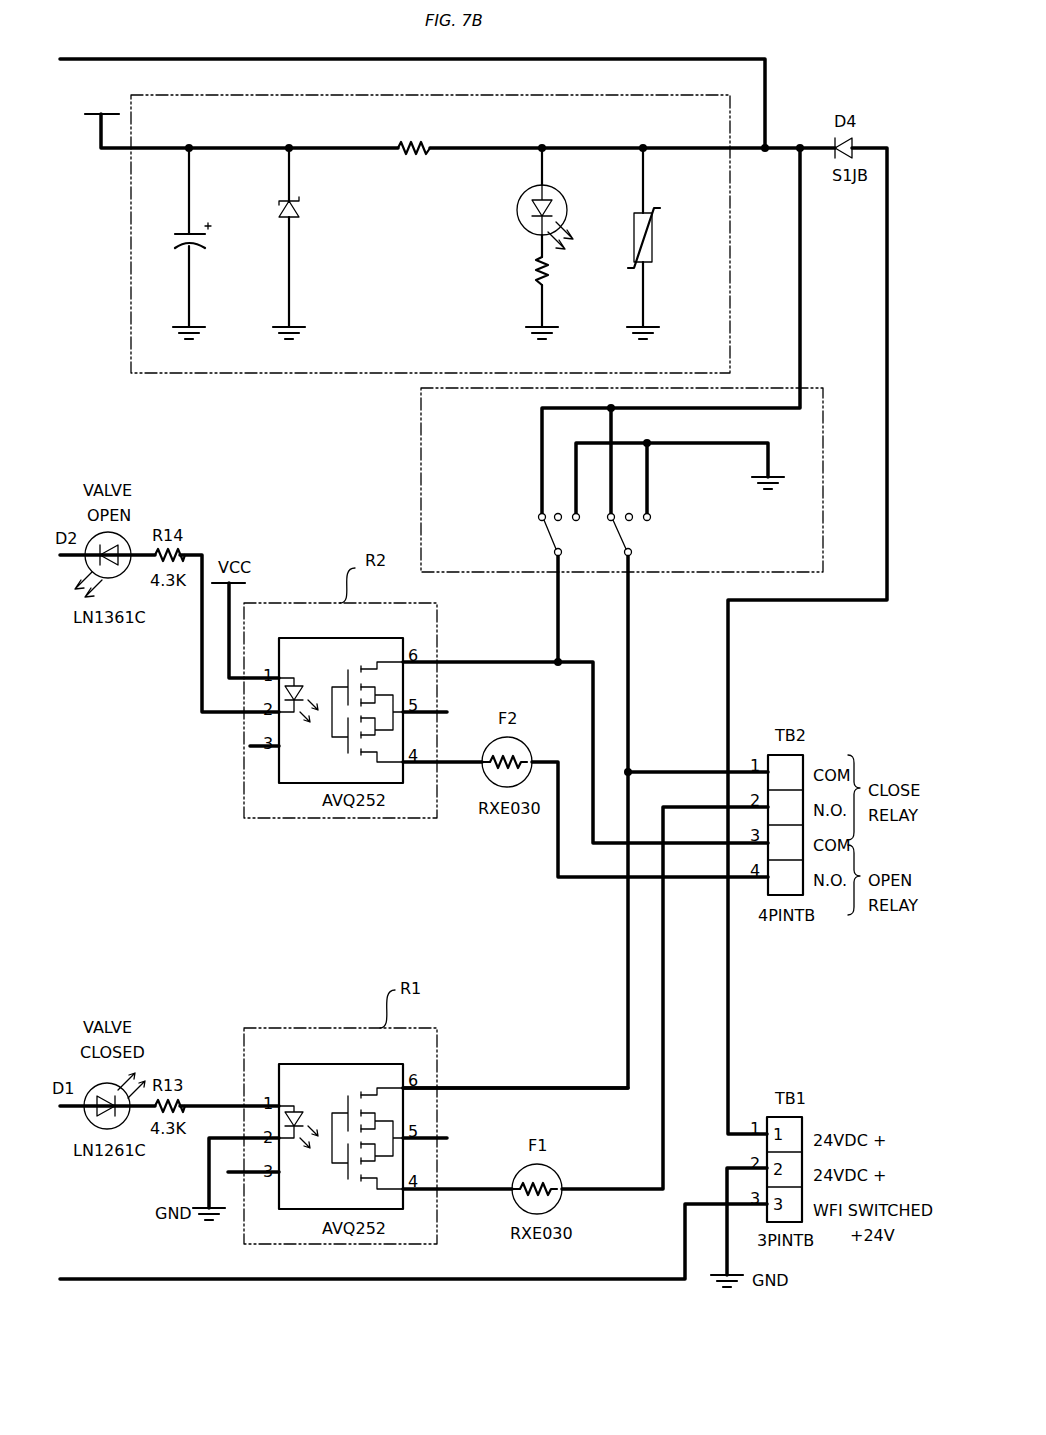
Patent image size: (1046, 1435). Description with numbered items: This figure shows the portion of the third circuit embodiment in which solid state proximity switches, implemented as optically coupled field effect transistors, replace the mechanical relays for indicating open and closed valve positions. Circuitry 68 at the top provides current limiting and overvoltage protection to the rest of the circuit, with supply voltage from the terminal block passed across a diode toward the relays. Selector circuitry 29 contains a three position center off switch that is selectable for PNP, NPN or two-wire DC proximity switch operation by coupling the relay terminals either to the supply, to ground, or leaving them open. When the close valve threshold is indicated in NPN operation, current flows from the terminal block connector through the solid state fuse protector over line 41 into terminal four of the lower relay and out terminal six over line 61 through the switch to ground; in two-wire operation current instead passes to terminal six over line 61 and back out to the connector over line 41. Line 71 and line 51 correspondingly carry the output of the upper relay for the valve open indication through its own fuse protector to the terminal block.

The circuitry 68 is at (730, 300).
The selector circuitry 29 is at (421, 483).
The relay output line 71 is at (480, 650).
The second potentiometer 51 is at (442, 750).
The line 61 is at (515, 1076).
The line 41 is at (457, 1179).